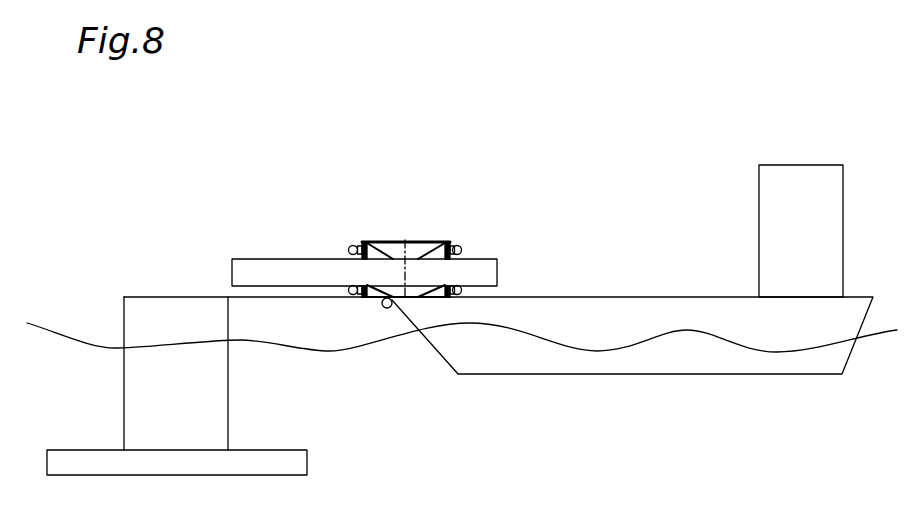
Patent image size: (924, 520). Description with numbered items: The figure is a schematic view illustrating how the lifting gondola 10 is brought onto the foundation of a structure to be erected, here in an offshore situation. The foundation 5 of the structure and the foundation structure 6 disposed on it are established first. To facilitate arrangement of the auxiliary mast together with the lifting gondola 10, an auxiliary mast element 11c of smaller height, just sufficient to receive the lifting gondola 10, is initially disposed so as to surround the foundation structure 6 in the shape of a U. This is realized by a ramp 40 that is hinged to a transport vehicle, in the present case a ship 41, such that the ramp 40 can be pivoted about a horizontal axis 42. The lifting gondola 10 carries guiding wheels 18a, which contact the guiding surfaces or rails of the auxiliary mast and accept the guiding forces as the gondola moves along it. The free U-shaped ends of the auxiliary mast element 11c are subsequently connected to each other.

The foundation 5 is at (300, 462).
The foundation structure 6 is at (221, 412).
The lifting gondola 10 is at (262, 270).
The auxiliary mast element 11c is at (415, 236).
The guiding wheels 18a is at (349, 247).
The ramp 40 is at (307, 300).
The ship 41 is at (633, 302).
The horizontal axis 42 is at (388, 308).